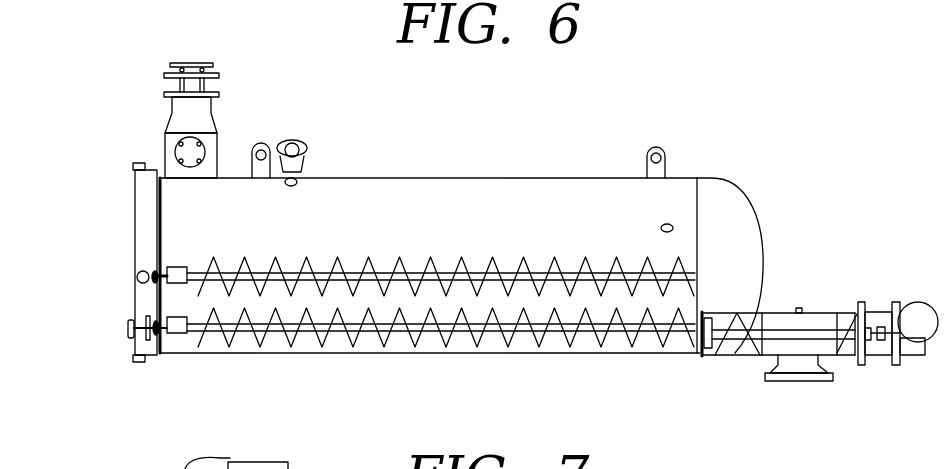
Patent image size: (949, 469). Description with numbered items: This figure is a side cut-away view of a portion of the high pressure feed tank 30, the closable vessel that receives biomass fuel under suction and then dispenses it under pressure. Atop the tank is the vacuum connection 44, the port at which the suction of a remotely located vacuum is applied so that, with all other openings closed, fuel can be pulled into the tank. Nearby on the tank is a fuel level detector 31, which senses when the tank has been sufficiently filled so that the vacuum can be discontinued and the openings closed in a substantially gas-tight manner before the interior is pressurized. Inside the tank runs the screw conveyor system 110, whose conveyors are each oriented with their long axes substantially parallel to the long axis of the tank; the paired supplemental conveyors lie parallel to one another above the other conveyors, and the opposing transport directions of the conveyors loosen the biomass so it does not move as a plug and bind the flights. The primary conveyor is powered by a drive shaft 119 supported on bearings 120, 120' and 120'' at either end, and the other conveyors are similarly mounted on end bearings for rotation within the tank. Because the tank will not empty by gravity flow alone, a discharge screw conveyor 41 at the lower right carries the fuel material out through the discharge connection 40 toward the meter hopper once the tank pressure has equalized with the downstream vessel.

The high pressure feed tank 30 is at (463, 132).
The vacuum connection 44 is at (252, 70).
The fuel level detector 31 is at (318, 140).
The screw conveyor system 110 is at (417, 245).
The discharge screw conveyor 41 is at (784, 290).
The drive shaft 119 is at (813, 333).
The bearing 120 is at (903, 365).
The bearing 120' is at (680, 369).
The bearing 120'' is at (205, 366).
The discharge connection 40 is at (826, 410).